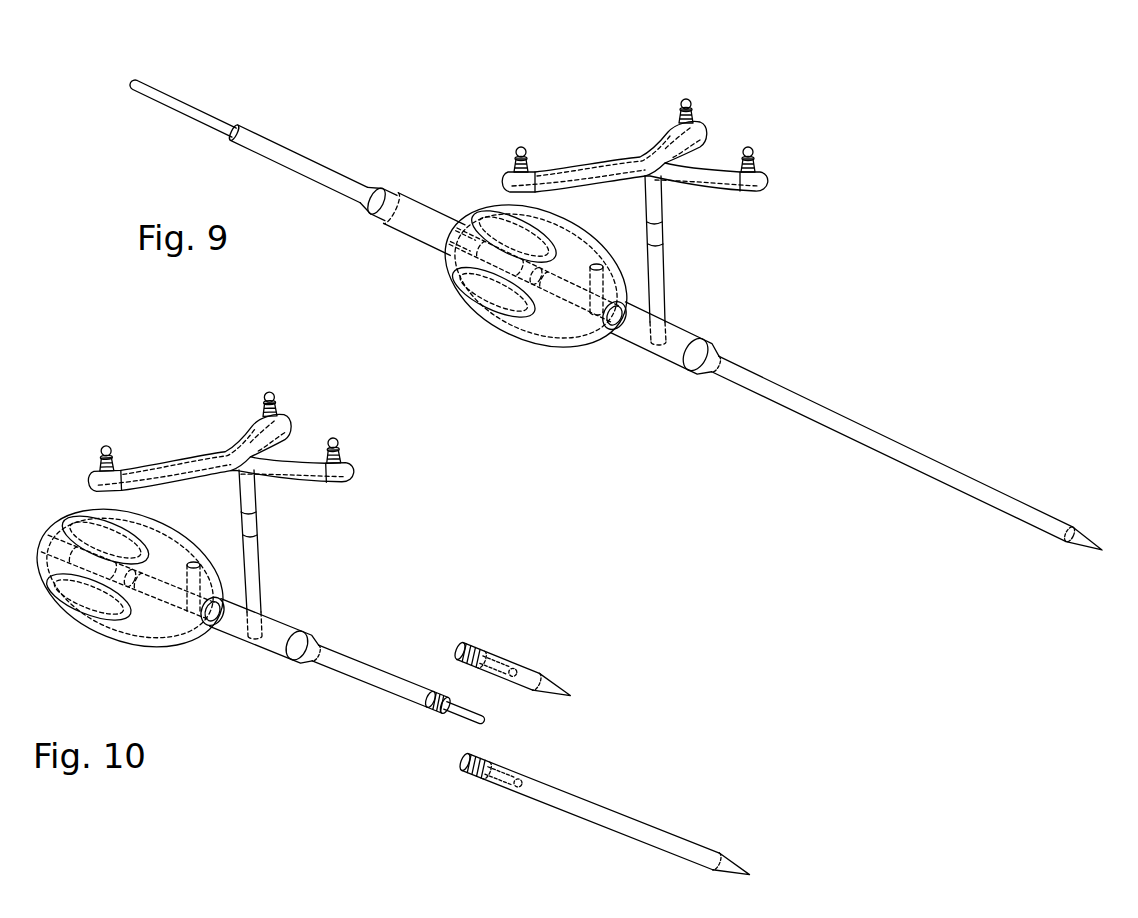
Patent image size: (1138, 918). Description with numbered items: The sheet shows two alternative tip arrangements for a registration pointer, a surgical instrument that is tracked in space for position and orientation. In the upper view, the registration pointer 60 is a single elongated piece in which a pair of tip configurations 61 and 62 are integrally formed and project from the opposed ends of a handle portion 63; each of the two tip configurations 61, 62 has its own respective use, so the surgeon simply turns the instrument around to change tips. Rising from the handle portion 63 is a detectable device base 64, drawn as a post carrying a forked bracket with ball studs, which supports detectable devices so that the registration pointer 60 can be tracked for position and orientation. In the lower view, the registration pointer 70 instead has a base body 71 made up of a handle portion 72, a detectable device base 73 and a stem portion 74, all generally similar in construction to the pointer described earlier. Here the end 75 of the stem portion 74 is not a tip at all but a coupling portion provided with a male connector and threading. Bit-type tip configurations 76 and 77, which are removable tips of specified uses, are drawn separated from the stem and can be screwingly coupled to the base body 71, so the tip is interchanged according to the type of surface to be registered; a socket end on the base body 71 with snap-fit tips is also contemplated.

In FIG. 9, the registration pointer 60 is at (810, 265).
In FIG. 9, the tip configuration 61 is at (1070, 562).
In FIG. 9, the tip configuration 62 is at (193, 85).
In FIG. 9, the handle portion 63 is at (548, 345).
In FIG. 9, the detectable device base 64 is at (663, 243).
In FIG. 10, the registration pointer 70 is at (522, 555).
In FIG. 10, the base body 71 is at (198, 677).
In FIG. 10, the handle portion 72 is at (130, 628).
In FIG. 10, the detectable device base 73 is at (258, 553).
In FIG. 10, the stem portion 74 is at (332, 652).
In FIG. 10, the end of the stem portion 75 is at (452, 713).
In FIG. 10, the bit-type tip configuration 76 is at (535, 665).
In FIG. 10, the bit-type tip configuration 77 is at (606, 806).